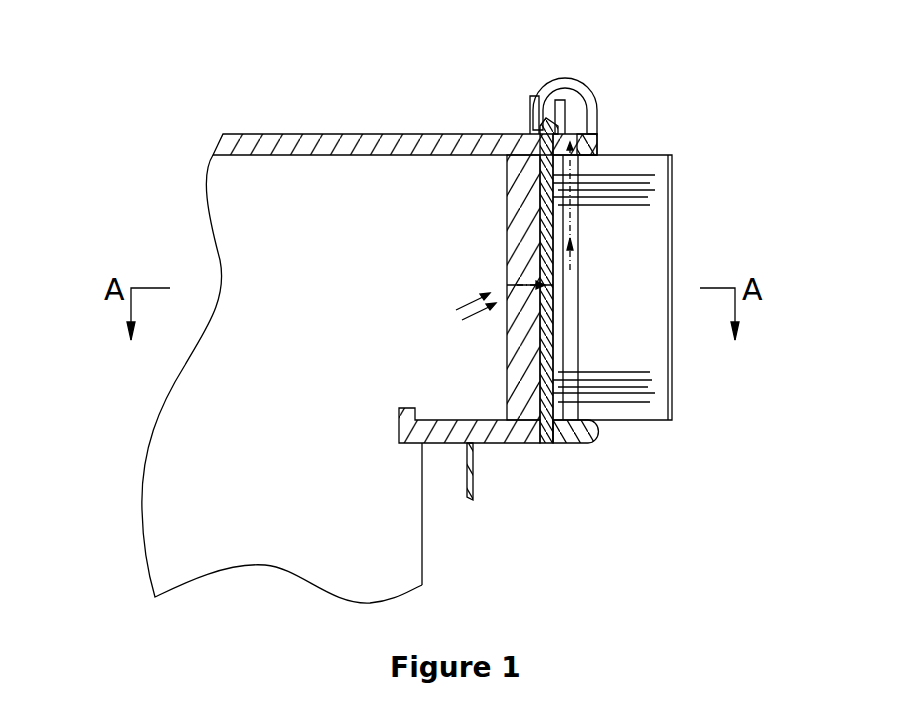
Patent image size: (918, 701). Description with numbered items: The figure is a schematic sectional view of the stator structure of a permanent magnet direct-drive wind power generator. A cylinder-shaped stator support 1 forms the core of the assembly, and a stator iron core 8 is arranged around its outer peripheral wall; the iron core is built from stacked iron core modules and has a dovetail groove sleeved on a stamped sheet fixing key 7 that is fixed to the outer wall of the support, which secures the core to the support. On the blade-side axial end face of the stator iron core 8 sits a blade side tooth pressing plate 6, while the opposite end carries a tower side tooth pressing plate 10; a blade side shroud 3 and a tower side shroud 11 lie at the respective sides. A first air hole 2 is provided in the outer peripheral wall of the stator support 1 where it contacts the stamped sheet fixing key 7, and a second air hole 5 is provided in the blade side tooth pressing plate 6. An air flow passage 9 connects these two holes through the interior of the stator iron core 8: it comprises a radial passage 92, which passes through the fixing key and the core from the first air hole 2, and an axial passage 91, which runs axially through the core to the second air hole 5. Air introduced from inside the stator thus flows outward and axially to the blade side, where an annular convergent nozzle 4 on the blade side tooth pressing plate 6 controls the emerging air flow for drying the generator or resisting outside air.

The stator support 1 is at (369, 313).
The first air hole 2 is at (447, 219).
The blade side shroud 3 is at (514, 102).
The convergent nozzle 4 is at (572, 65).
The second air hole 5 is at (612, 95).
The blade side tooth pressing plate 6 is at (585, 140).
The stamped sheet fixing key 7 is at (552, 170).
The stator iron core 8 is at (650, 197).
The air flow passage 9 is at (600, 277).
The axial passage 91 is at (578, 258).
The radial passage 92 is at (618, 352).
The tower side tooth pressing plate 10 is at (587, 456).
The tower side shroud 11 is at (598, 520).